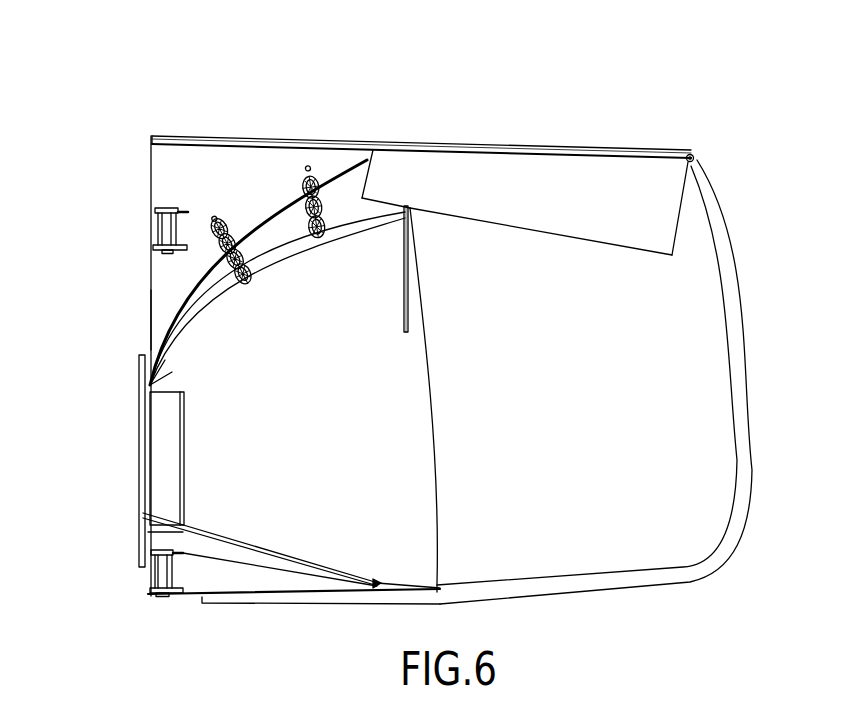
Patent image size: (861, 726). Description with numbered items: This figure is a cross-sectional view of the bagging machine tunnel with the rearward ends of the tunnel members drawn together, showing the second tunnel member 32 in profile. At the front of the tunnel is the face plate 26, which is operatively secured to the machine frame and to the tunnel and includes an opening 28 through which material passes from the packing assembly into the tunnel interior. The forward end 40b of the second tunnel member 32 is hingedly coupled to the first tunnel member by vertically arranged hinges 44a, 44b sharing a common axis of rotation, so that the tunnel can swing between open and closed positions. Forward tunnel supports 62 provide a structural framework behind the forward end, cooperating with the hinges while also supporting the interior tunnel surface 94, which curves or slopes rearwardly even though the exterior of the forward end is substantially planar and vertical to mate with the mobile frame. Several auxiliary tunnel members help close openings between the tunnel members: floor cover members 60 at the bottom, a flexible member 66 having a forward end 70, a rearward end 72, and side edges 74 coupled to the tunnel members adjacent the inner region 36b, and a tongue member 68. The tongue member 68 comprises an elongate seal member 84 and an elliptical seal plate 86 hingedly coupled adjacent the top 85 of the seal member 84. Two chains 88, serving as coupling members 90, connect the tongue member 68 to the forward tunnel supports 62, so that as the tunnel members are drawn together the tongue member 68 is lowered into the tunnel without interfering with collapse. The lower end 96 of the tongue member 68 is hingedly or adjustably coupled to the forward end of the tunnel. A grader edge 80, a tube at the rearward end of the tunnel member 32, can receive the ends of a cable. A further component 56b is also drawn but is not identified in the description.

The face plate 26 is at (138, 483).
The opening 28 is at (163, 450).
The second tunnel member 32 is at (730, 198).
The inner region 36b is at (449, 122).
The forward end 40b is at (218, 120).
The hinge 44a is at (152, 572).
The hinge 44b is at (167, 232).
The lower member 56b is at (380, 575).
The floor cover member 60 is at (213, 532).
The forward tunnel support 62 is at (167, 170).
The flexible member 66 is at (619, 243).
The tongue member 68 is at (428, 237).
The forward end 70 is at (368, 168).
The rearward end 72 is at (683, 198).
The side edge 74 is at (641, 152).
The grader edge 80 is at (735, 338).
The elongate seal member 84 is at (293, 258).
The top 85 is at (410, 208).
The seal plate 86 is at (408, 288).
The chain 88 is at (213, 212).
The coupling member 90 is at (238, 220).
The interior tunnel surface 94 is at (152, 297).
The lower end 96 is at (156, 384).